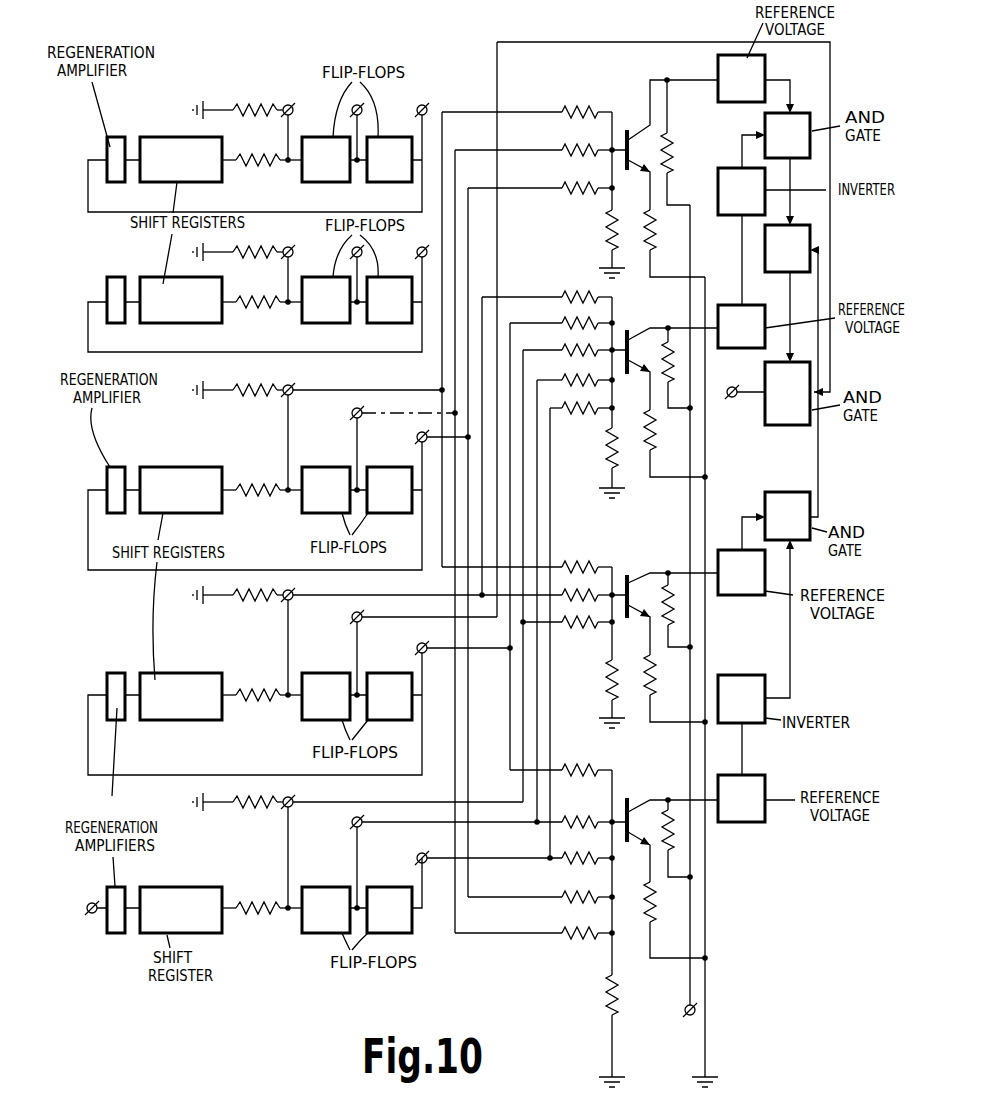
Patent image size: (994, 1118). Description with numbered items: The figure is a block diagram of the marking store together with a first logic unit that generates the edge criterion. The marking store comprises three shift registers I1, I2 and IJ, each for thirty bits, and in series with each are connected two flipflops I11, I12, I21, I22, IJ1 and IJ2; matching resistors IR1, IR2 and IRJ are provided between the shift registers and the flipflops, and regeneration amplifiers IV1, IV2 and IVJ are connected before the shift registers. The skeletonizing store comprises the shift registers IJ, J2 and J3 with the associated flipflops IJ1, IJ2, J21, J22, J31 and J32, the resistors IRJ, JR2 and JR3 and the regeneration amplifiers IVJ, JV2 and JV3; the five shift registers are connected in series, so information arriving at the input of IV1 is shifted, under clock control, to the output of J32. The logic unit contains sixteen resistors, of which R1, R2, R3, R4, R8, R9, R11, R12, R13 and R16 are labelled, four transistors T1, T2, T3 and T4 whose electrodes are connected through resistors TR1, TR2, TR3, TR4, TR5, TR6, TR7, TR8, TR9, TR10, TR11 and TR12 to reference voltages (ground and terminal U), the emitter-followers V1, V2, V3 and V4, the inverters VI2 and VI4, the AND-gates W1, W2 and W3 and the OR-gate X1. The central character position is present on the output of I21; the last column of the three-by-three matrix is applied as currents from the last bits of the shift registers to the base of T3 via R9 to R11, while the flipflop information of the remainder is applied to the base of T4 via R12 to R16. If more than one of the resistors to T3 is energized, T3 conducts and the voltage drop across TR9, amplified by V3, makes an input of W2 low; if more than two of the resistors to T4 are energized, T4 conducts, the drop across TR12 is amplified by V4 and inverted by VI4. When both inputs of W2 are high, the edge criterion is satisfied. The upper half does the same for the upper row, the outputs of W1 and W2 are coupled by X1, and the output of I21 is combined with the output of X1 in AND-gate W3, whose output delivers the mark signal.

The regeneration amplifier JV3 is at (119, 136).
The shift register J3 is at (181, 159).
The resistor JR3 is at (282, 120).
The flipflop J31 is at (326, 159).
The flipflop J32 is at (389, 159).
The regeneration amplifier JV2 is at (115, 276).
The shift register J2 is at (181, 300).
The resistor JR2 is at (278, 258).
The flipflop J21 is at (326, 300).
The flipflop J22 is at (389, 300).
The regeneration amplifier IVJ is at (112, 466).
The shift register IJ is at (181, 490).
The matching resistor IRJ is at (268, 402).
The flipflop IJ1 is at (326, 490).
The flipflop IJ2 is at (389, 490).
The regeneration amplifier IV2 is at (115, 672).
The shift register I2 is at (181, 696).
The matching resistor IR2 is at (258, 615).
The flipflop I21 is at (326, 696).
The flipflop I22 is at (389, 696).
The regeneration amplifier IV1 is at (117, 934).
The shift register I1 is at (181, 910).
The matching resistor IR1 is at (259, 818).
The flipflop I11 is at (326, 910).
The flipflop I12 is at (389, 910).
The resistor R1 is at (566, 108).
The resistor R2 is at (566, 148).
The resistor R3 is at (566, 186).
The resistor R4 is at (566, 294).
The resistor R8 is at (578, 411).
The resistor R9 is at (578, 562).
The resistor R11 is at (575, 627).
The resistor R12 is at (566, 766).
The resistor R13 is at (571, 821).
The resistor R16 is at (566, 937).
The resistor TR1 is at (600, 228).
The resistor TR2 is at (657, 238).
The resistor TR3 is at (673, 153).
The resistor TR4 is at (604, 458).
The resistor TR5 is at (645, 450).
The resistor TR6 is at (677, 379).
The resistor TR7 is at (604, 683).
The resistor TR8 is at (649, 668).
The resistor TR9 is at (672, 608).
The resistor TR10 is at (583, 928).
The resistor TR11 is at (638, 912).
The resistor TR12 is at (680, 835).
The transistor T1 is at (638, 137).
The transistor T2 is at (640, 340).
The transistor T3 is at (640, 578).
The transistor T4 is at (638, 803).
The emitter-follower V1 is at (741, 78).
The emitter-follower V2 is at (741, 326).
The emitter-follower V3 is at (741, 572).
The emitter-follower V4 is at (741, 798).
The AND-gate W1 is at (787, 135).
The AND-gate W2 is at (787, 516).
The AND-gate W3 is at (787, 393).
The OR-gate X1 is at (787, 248).
The inverter VI2 is at (741, 191).
The inverter VI4 is at (741, 699).
The terminal U is at (688, 1015).